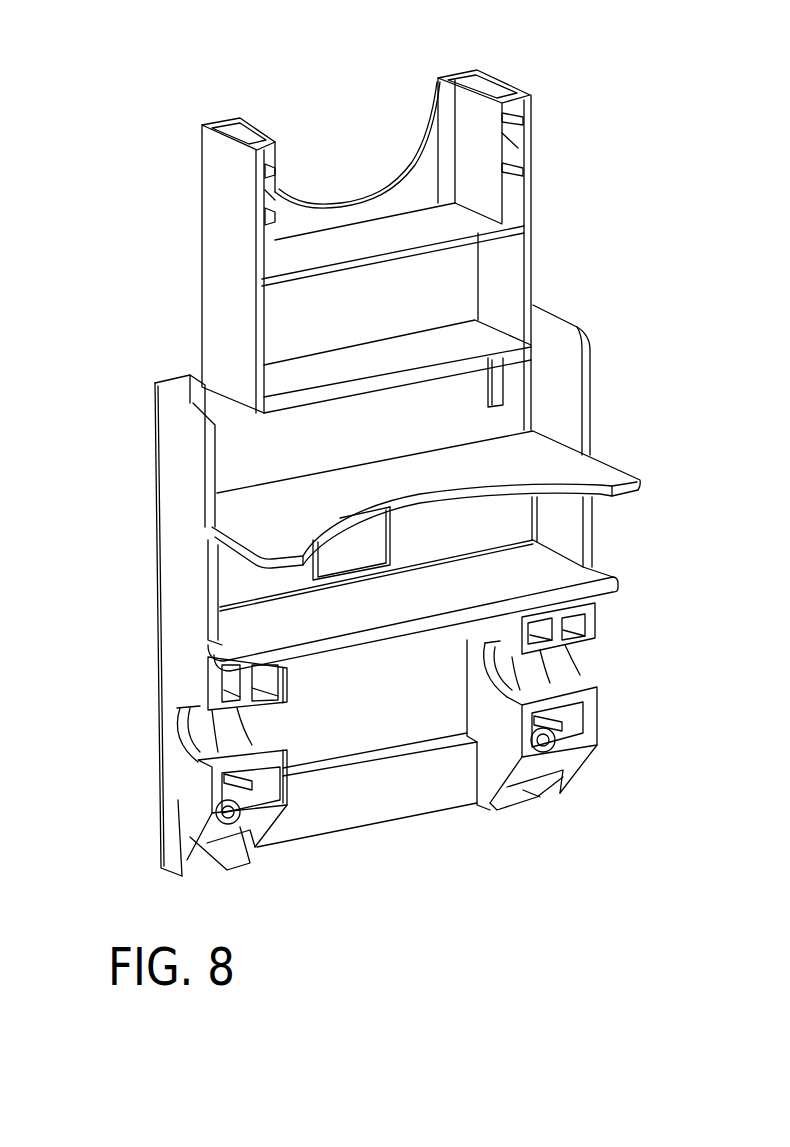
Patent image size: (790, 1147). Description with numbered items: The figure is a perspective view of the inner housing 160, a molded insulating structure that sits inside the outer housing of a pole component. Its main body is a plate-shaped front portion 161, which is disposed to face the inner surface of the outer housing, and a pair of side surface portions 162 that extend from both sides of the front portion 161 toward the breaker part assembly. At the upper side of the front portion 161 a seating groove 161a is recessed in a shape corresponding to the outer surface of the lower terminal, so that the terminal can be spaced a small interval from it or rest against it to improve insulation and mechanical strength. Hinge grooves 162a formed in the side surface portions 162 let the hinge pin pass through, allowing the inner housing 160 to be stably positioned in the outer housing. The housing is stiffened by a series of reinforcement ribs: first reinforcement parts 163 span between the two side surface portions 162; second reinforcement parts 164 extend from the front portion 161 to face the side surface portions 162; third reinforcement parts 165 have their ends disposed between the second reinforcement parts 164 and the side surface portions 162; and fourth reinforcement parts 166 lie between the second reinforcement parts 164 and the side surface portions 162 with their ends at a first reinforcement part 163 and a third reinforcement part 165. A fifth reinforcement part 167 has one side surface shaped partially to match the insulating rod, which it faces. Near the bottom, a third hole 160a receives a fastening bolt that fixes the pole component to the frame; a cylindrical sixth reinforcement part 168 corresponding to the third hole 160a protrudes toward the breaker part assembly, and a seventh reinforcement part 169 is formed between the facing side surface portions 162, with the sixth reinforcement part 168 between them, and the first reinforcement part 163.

The inner housing 160 is at (227, 27).
The front portion 161 is at (395, 810).
The seating groove 161a is at (347, 168).
The side surface portions 162 is at (170, 610).
The hinge grooves 162a is at (207, 731).
The first reinforcement parts 163 is at (455, 243).
The second reinforcement parts 164 is at (273, 197).
The third reinforcement parts 165 is at (265, 168).
The fourth reinforcement parts 166 is at (230, 689).
The fifth reinforcement part 167 is at (528, 458).
The sixth reinforcement part 168 is at (208, 860).
The seventh reinforcement part 169 is at (232, 860).
The third hole 160a is at (225, 810).